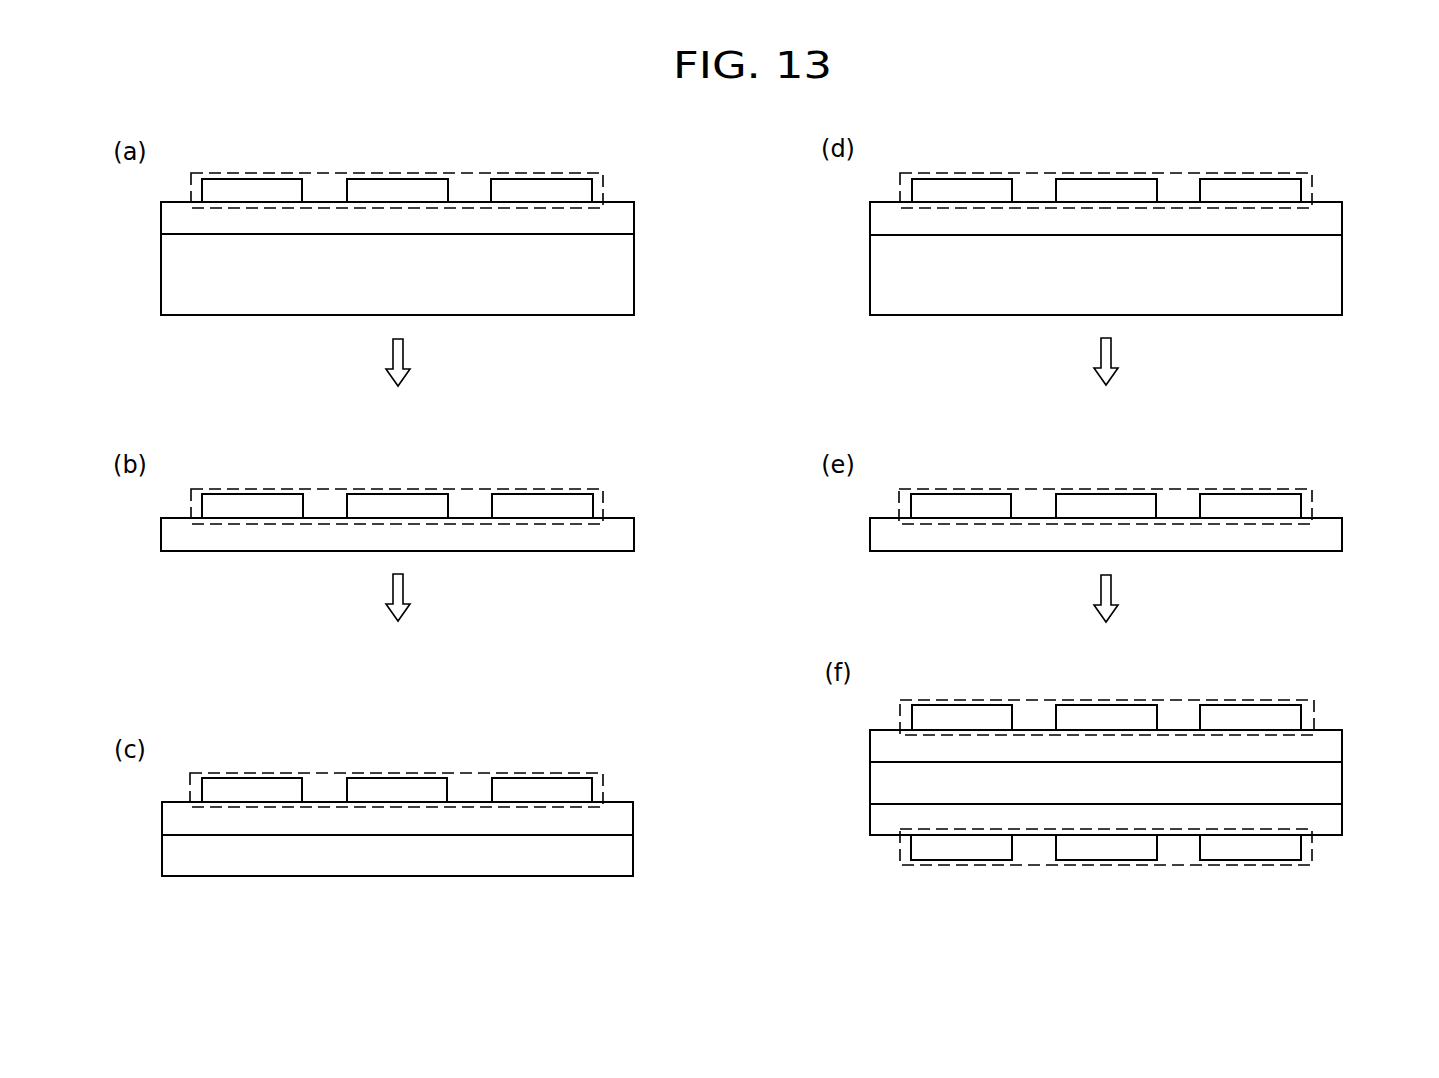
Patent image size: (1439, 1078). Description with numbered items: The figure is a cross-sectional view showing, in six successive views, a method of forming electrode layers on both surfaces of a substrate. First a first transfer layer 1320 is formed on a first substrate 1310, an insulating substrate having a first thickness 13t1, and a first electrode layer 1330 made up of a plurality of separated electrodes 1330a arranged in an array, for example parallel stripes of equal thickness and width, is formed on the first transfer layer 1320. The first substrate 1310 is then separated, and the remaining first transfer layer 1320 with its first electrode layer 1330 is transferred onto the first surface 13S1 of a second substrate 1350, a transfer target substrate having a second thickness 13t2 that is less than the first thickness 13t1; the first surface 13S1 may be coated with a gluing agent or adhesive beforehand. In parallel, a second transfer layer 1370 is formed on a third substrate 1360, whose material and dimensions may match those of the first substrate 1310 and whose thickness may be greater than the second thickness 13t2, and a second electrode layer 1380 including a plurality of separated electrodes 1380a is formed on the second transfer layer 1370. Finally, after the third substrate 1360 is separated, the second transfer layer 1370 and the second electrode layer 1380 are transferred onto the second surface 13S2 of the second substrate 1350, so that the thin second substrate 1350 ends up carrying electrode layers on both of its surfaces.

The first substrate 1310 is at (634, 277).
The first transfer layer 1320 is at (634, 216).
The first electrode layer 1330 is at (468, 176).
The electrodes 1330a is at (252, 183).
The second substrate 1350 is at (633, 856).
The third substrate 1360 is at (1342, 275).
The second transfer layer 1370 is at (1342, 218).
The second electrode layer 1380 is at (1177, 175).
The electrodes 1380a is at (961, 185).
The first surface 13S1 is at (176, 833).
The second surface 13S2 is at (178, 878).
The first thickness 13t1 is at (253, 237).
The second thickness 13t2 is at (252, 838).